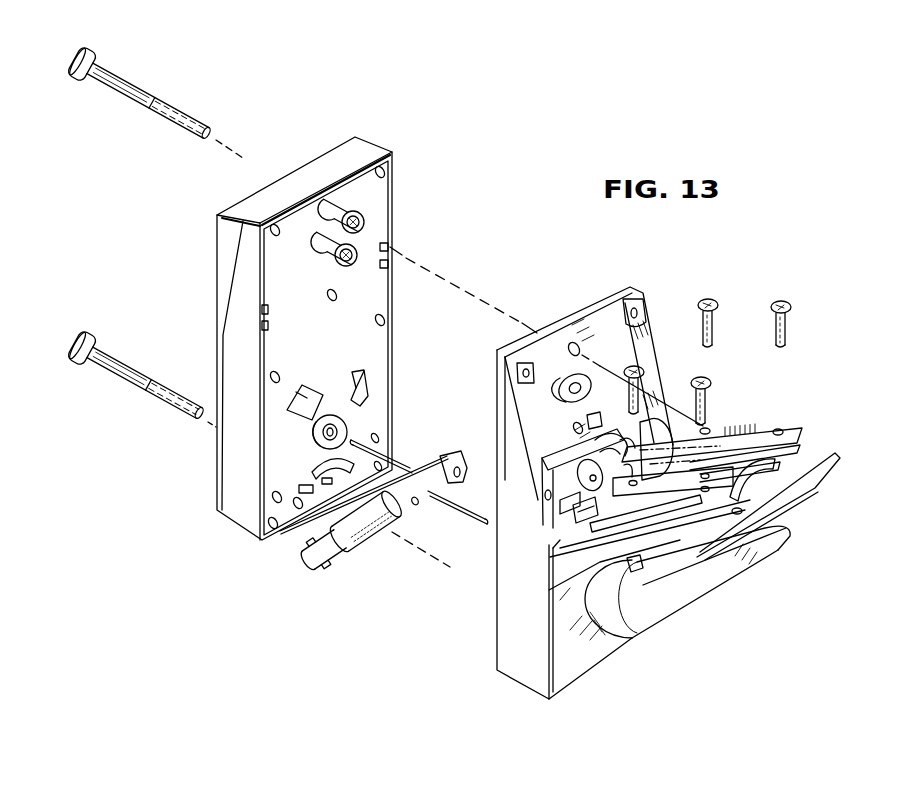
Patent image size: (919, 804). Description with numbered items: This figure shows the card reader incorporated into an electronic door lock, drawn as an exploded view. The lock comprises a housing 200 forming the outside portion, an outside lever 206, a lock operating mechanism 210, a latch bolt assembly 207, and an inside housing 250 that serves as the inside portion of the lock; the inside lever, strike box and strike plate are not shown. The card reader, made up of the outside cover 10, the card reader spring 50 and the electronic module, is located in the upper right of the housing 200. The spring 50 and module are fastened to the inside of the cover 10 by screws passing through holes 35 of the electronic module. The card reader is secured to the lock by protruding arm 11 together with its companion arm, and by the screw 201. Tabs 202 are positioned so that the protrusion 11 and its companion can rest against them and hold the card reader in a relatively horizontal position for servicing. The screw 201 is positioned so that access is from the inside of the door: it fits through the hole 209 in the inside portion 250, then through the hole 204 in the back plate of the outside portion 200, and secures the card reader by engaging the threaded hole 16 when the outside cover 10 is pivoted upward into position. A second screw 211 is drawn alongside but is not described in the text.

The screw 201 is at (130, 112).
The screw 211 is at (128, 392).
The inside housing 250 is at (232, 547).
The hole 209 is at (364, 216).
The lock operating mechanism 210 is at (548, 505).
The latch bolt assembly 207 is at (300, 562).
The housing 200 is at (622, 656).
The hole 204 is at (578, 345).
The holes 35 is at (650, 473).
The card reader spring 50 is at (832, 456).
The outside housing or cover 10 is at (834, 474).
The threaded hole 16 is at (747, 487).
The tabs 202 is at (532, 560).
The protruding arm 11 is at (532, 598).
The outside lever 206 is at (720, 592).